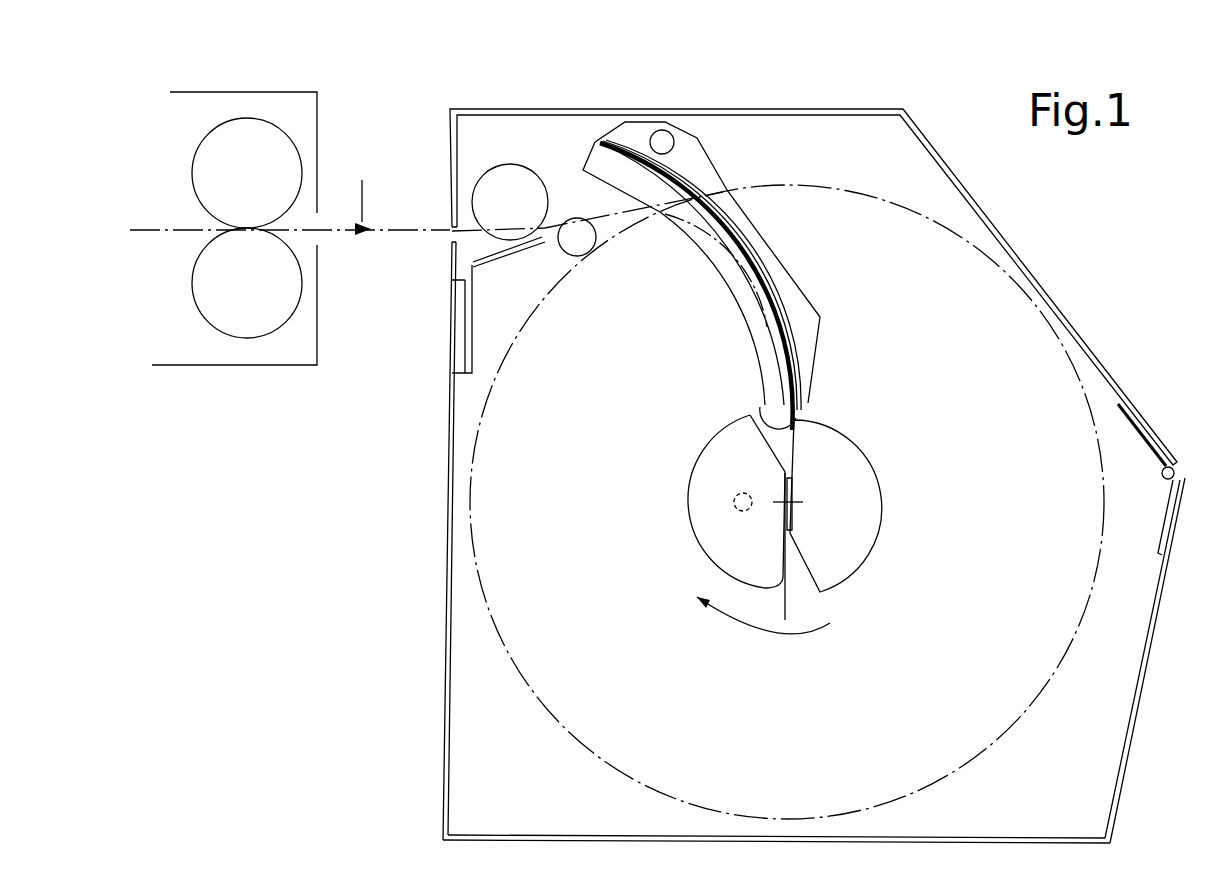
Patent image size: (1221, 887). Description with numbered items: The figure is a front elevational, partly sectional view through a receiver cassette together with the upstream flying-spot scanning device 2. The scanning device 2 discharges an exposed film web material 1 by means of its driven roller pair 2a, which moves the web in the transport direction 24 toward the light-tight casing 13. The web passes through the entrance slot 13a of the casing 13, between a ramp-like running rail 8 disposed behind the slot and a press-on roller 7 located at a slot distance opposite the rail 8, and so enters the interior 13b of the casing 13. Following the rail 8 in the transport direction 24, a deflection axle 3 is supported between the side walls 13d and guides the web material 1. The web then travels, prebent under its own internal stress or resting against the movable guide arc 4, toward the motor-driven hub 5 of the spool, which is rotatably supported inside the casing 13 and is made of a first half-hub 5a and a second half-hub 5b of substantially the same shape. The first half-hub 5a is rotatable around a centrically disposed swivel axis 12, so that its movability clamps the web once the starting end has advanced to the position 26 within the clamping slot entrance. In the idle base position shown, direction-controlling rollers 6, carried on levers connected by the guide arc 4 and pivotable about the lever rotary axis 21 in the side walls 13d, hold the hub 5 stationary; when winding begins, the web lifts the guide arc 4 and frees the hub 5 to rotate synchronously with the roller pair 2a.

The web material 1 is at (329, 226).
The flying-spot scanning device 2 is at (193, 112).
The driven roller pair 2a is at (223, 318).
The deflection axle 3 is at (572, 232).
The guide arc 4 is at (750, 255).
The hub of the spool 5 is at (722, 472).
The first half-hub of the spool 5a is at (762, 547).
The second half-hub of the spool 5b is at (827, 572).
The direction-controlling rollers 6 is at (773, 432).
The press-on roller 7 is at (507, 178).
The ramp-like running rail 8 is at (466, 256).
The swivel axis 12 is at (737, 502).
The casing 13 is at (443, 678).
The entrance slot 13a is at (440, 224).
The interior of the casing 13b is at (483, 790).
The side walls 13d is at (983, 798).
The lever rotary axis 21 is at (660, 130).
The transport direction 24 is at (723, 648).
The position of the web starting end 26 is at (787, 607).